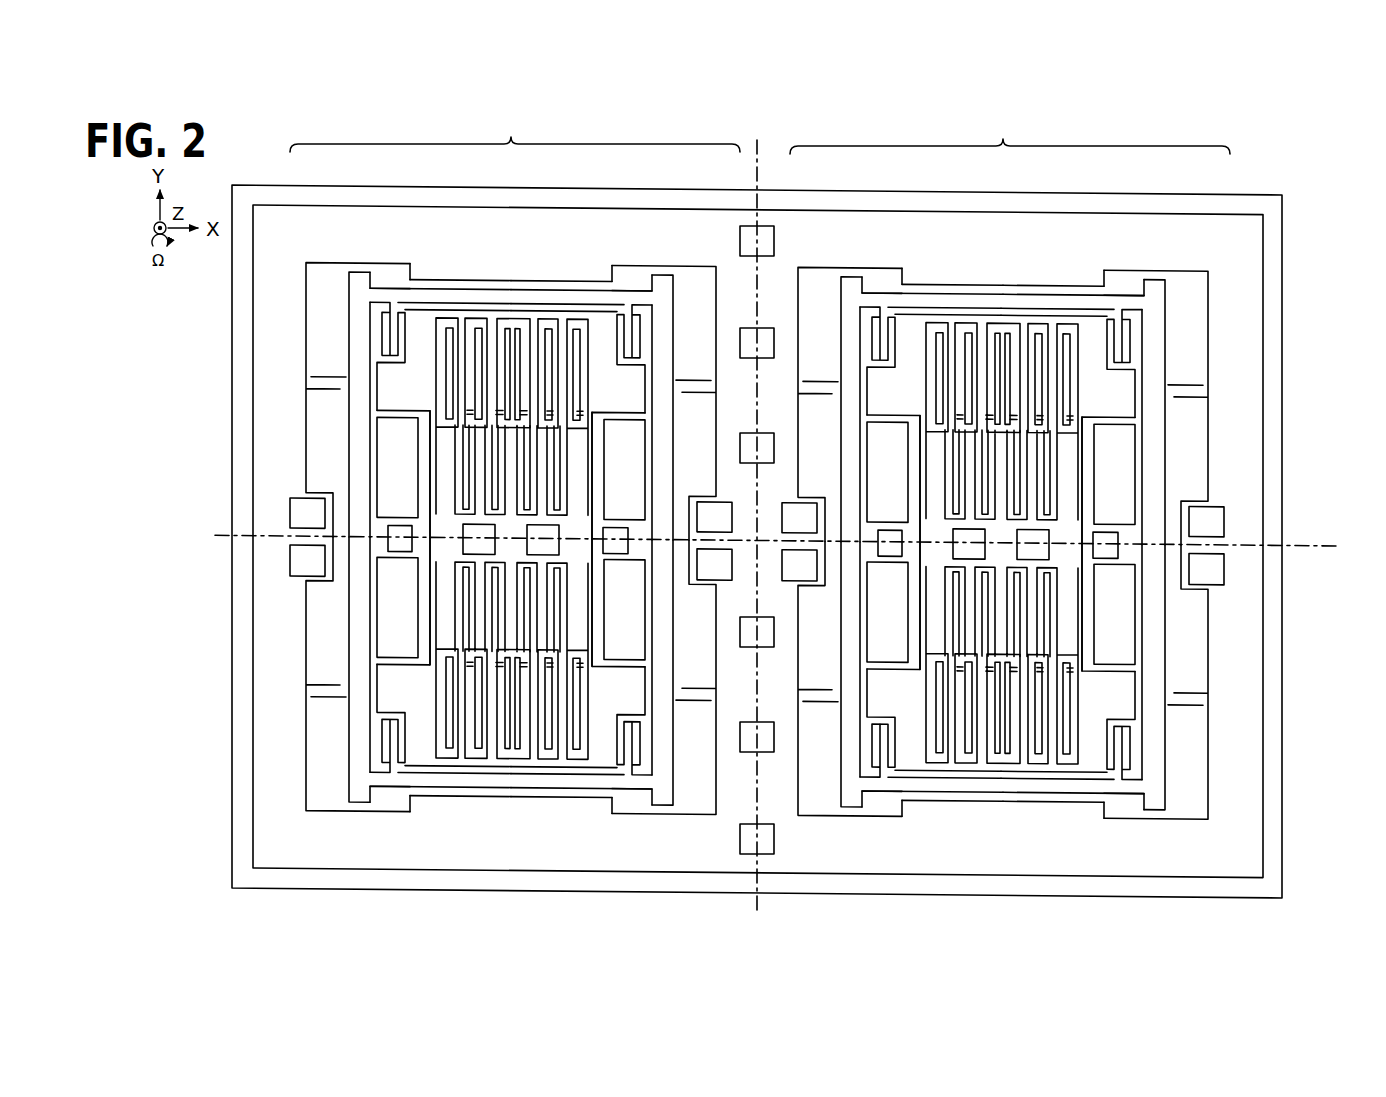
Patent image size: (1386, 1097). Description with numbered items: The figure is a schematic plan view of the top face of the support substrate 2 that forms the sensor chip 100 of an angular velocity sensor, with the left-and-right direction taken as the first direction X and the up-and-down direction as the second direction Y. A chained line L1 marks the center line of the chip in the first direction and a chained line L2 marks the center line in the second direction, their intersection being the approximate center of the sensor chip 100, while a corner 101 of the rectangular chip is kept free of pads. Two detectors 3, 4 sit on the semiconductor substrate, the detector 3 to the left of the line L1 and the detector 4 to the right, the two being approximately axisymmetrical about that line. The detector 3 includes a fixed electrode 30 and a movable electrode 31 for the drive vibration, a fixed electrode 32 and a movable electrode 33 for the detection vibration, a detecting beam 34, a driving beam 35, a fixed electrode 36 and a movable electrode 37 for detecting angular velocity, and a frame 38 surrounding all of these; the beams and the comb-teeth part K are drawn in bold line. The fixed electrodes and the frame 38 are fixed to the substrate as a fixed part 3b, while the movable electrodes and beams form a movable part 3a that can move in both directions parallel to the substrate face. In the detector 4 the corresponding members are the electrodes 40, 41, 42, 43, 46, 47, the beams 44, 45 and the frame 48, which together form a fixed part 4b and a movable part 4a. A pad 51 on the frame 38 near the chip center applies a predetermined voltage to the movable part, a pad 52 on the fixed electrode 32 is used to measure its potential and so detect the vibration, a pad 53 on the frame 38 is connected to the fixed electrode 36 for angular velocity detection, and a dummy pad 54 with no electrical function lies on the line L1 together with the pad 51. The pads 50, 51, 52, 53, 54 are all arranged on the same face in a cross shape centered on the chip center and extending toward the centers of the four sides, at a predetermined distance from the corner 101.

The support substrate 2 is at (1285, 226).
The sensor chip 100 is at (1288, 190).
The corner 101 is at (234, 888).
The detector 3 is at (515, 133).
The detector 4 is at (1010, 135).
The movable part 3a is at (600, 335).
The fixed part 3b is at (420, 603).
The movable part 4a is at (910, 339).
The fixed part 4b is at (1066, 565).
The fixed electrode 30 is at (478, 330).
The movable electrode 31 is at (461, 352).
The fixed electrode 32 is at (388, 500).
The movable electrode 33 is at (388, 470).
The detecting beam 34 is at (386, 272).
The driving beam 35 is at (378, 320).
The fixed electrode 36 is at (290, 372).
The movable electrode 37 is at (356, 352).
The frame 38 is at (290, 235).
The fixed electrode 40 is at (961, 334).
The movable electrode 41 is at (1048, 354).
The fixed electrode 42 is at (1120, 497).
The movable electrode 43 is at (1120, 450).
The beam 44 is at (877, 276).
The beam 45 is at (873, 328).
The fixed electrode 46 is at (1235, 376).
The movable electrode 47 is at (1150, 350).
The frame 48 is at (1228, 242).
The pad 50 is at (478, 552).
The pad 51 is at (758, 448).
The pad 52 is at (400, 550).
The pad 53 is at (300, 517).
The dummy pad 54 is at (768, 243).
The comb-teeth part K is at (440, 428).
The chained line L1 is at (757, 168).
The chained line L2 is at (1320, 550).